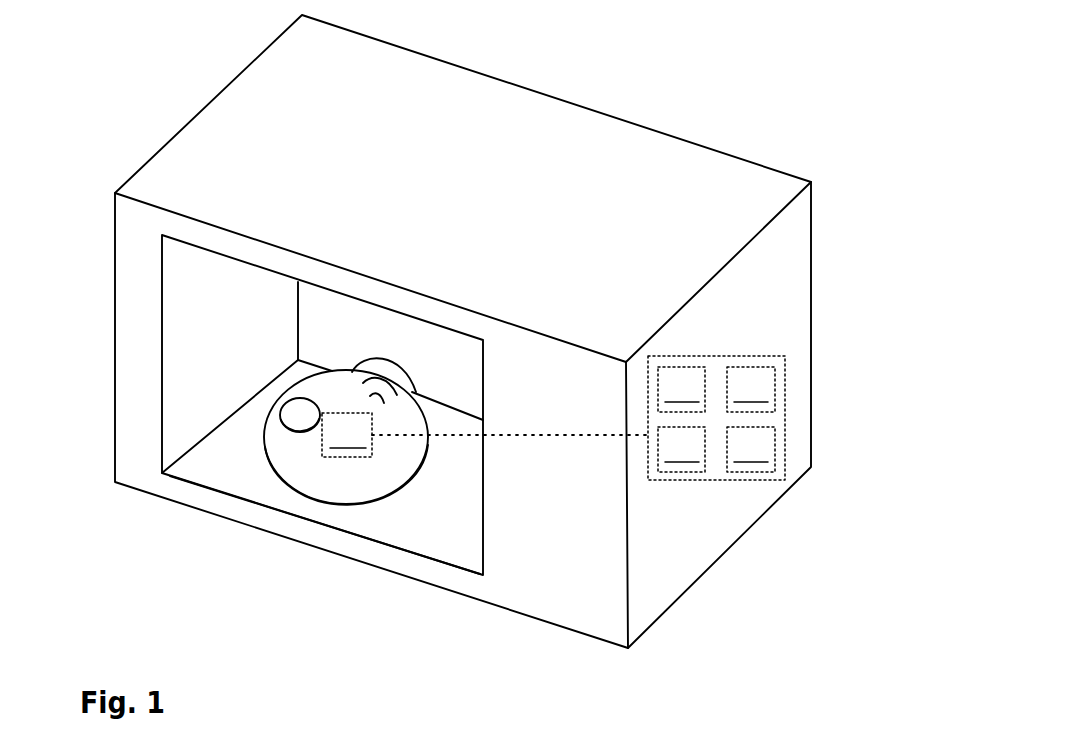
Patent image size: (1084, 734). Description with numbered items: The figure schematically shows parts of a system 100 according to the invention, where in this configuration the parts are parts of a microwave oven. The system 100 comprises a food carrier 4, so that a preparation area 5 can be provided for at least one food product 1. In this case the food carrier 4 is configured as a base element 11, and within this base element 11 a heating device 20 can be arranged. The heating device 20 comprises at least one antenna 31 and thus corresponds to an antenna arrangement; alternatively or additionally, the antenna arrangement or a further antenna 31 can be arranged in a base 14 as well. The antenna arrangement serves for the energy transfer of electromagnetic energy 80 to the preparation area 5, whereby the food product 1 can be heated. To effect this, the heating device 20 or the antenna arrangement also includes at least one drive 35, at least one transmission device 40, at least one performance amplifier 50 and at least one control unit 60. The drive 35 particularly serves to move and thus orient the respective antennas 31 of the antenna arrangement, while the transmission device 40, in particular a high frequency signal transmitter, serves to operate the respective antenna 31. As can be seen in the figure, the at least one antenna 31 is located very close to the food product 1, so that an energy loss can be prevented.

The system 100 is at (818, 205).
The preparation area 5 is at (257, 378).
The base 14 is at (417, 525).
The food product 1 is at (268, 442).
The food carrier 4 is at (308, 490).
The base element 11 is at (283, 547).
The electromagnetic energy 80 is at (408, 373).
The heating device 20 is at (553, 509).
The antenna 31 is at (347, 435).
The transmission device 40 is at (681, 389).
The control unit 60 is at (751, 389).
The performance amplifier 50 is at (681, 449).
The drive 35 is at (751, 449).